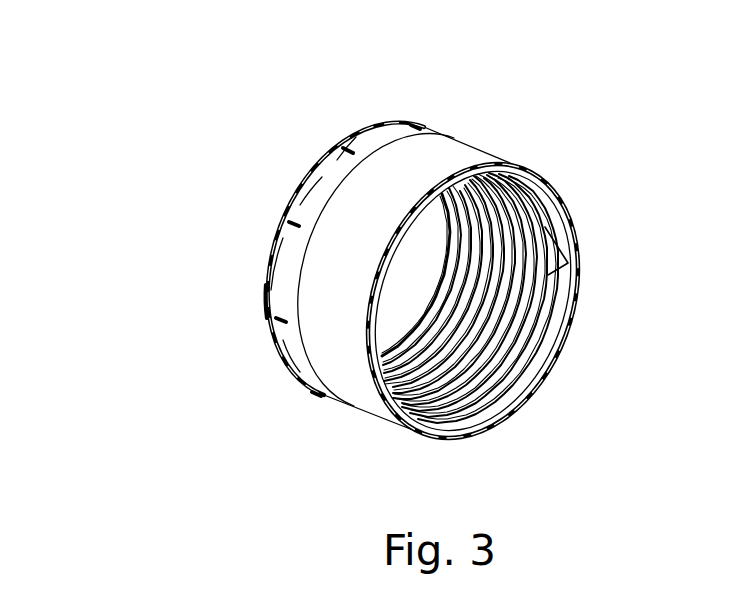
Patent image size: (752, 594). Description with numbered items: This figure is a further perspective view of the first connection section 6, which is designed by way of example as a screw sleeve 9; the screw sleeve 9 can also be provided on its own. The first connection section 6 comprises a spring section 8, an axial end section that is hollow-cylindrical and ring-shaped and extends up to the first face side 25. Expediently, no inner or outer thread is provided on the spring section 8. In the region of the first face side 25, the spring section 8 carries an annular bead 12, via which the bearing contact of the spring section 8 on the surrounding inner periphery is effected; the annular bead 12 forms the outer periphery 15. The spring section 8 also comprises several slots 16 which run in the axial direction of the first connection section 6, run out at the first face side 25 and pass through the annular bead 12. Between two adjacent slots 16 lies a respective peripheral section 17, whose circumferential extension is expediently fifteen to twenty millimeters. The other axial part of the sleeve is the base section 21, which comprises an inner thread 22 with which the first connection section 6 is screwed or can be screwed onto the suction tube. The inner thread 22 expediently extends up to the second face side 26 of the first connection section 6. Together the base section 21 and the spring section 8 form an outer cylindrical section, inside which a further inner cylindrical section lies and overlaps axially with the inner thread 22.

The first connection section 6 is at (371, 261).
The screw sleeve 9 is at (371, 268).
The spring section 8 is at (300, 228).
The annular bead 12 is at (285, 259).
The outer periphery 15 is at (265, 277).
The slots 16 is at (343, 147).
The peripheral section 17 is at (362, 140).
The base section 21 is at (463, 157).
The inner thread 22 is at (525, 370).
The first face side 25 is at (265, 302).
The second face side 26 is at (510, 415).